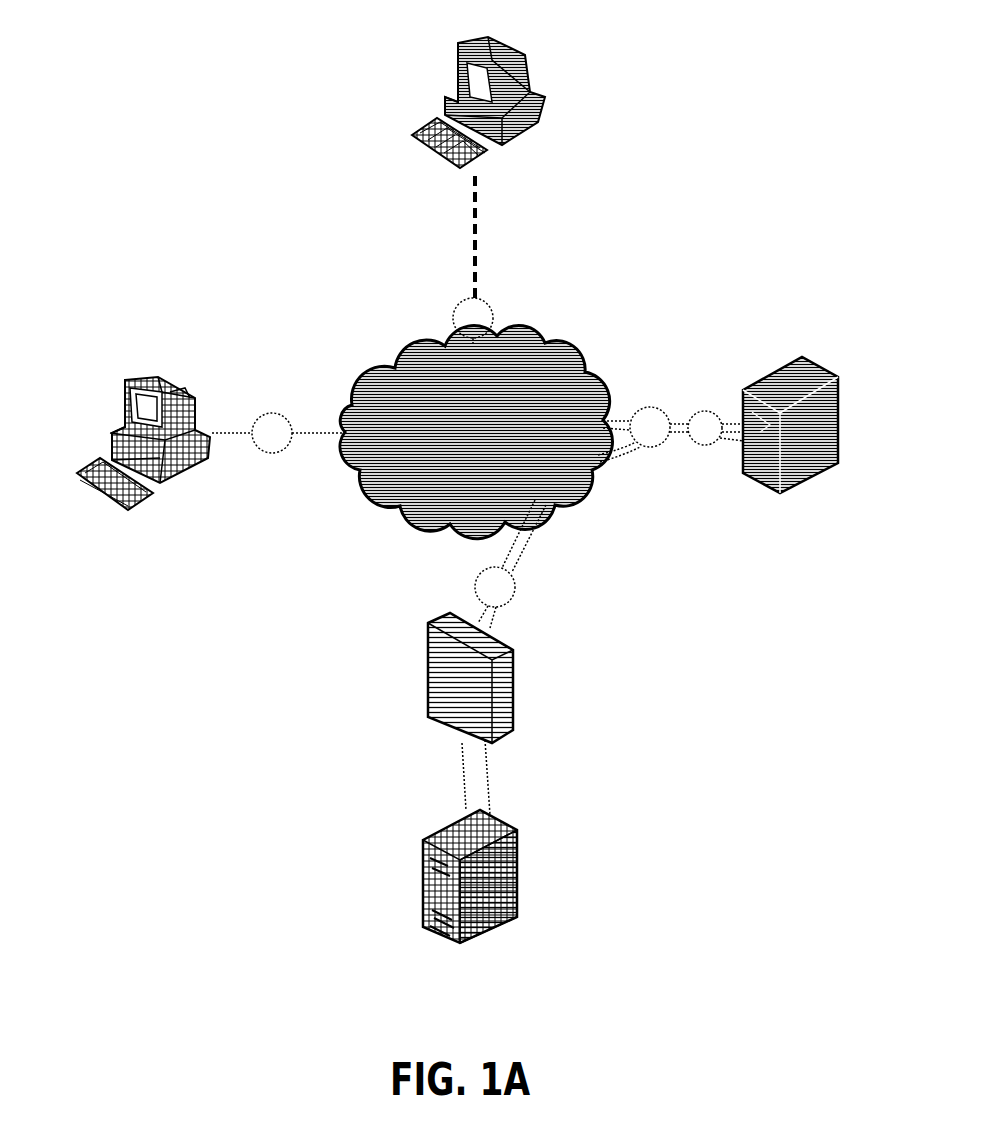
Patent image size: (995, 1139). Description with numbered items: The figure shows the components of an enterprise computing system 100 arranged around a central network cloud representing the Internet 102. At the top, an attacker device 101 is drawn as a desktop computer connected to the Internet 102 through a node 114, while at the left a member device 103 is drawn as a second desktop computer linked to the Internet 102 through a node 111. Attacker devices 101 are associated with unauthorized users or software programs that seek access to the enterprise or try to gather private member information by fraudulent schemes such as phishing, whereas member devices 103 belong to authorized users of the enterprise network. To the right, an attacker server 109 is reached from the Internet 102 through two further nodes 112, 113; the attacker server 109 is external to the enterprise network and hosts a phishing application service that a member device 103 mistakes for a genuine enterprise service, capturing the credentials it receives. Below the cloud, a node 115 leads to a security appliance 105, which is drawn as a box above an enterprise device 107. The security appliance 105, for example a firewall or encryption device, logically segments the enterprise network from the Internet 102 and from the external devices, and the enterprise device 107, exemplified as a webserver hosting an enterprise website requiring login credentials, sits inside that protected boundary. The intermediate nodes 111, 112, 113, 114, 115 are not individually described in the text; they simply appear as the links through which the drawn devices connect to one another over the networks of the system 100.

The enterprise computing system 100 is at (148, 64).
The attacker device 101 is at (495, 167).
The Internet 102 is at (476, 431).
The member device 103 is at (164, 422).
The security appliance 105 is at (499, 714).
The enterprise device 107 is at (470, 899).
The attacker server 109 is at (791, 411).
The network connection 111 is at (290, 424).
The network connection 112 is at (650, 407).
The network connection 113 is at (705, 410).
The network connection 114 is at (494, 326).
The network connection 115 is at (514, 597).